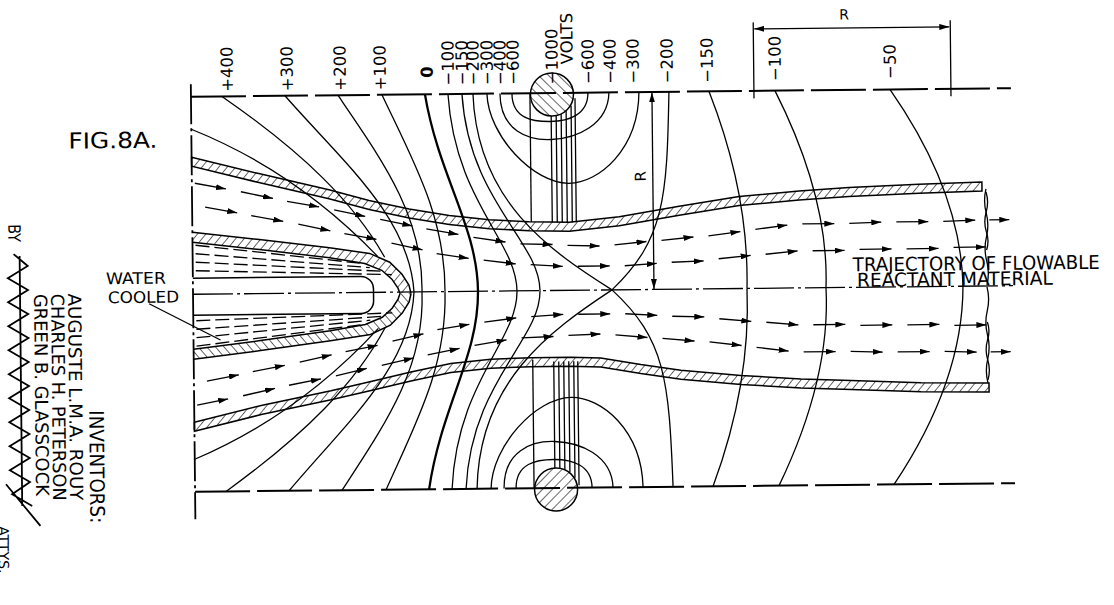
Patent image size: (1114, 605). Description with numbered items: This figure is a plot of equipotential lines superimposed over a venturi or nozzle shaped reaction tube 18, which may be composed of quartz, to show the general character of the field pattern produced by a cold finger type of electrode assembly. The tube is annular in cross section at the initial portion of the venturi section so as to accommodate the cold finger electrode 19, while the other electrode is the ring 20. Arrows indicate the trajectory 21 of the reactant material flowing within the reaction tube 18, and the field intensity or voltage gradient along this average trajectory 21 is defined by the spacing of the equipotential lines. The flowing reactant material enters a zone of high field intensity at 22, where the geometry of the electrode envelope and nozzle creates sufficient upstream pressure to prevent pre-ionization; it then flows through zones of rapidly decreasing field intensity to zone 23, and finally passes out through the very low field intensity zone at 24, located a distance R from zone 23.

The reaction tube 18 is at (701, 204).
The cold finger electrode 19 is at (263, 275).
The ring electrode 20 is at (546, 80).
The trajectory of the reactant material 21 is at (445, 231).
The zone of high field intensity 22 is at (369, 226).
The zone of decreased field intensity 23 is at (573, 290).
The very low field intensity zone 24 is at (837, 288).